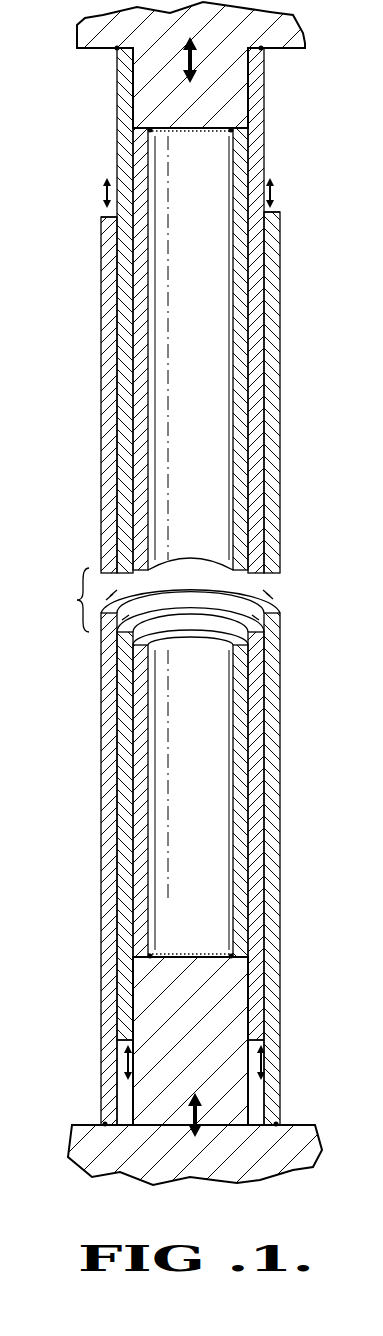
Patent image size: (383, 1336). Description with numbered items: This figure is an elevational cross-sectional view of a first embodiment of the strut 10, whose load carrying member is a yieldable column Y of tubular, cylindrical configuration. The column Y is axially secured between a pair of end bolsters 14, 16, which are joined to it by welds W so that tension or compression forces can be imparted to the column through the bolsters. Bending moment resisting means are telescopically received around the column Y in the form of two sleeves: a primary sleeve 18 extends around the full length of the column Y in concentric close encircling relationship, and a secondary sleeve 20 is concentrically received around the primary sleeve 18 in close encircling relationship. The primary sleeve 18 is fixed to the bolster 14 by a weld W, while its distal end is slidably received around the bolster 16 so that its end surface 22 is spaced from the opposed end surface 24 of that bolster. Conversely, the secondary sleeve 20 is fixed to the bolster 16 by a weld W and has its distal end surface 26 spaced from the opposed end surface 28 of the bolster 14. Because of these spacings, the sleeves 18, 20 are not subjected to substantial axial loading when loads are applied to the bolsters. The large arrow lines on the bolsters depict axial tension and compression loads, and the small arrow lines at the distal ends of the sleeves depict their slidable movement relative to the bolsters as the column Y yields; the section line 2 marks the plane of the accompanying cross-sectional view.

The strut 10 is at (286, 149).
The end bolster 14 is at (224, 88).
The end bolster 16 is at (240, 1003).
The primary sleeve 18 is at (263, 110).
The secondary sleeve 20 is at (280, 250).
The end surface of the primary sleeve 22 is at (268, 1043).
The end surface of the bolster 24 is at (263, 1123).
The distal end surface of the secondary sleeve 26 is at (271, 212).
The end surface of the bolster 28 is at (293, 51).
The weld W is at (112, 52).
The yieldable column Y is at (240, 778).
The section line 2- 2 is at (89, 493).